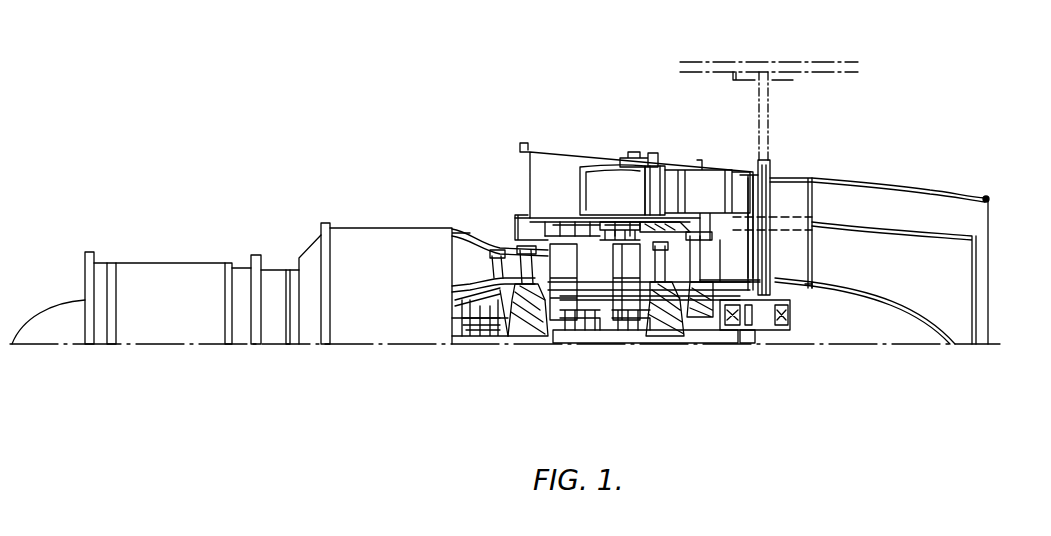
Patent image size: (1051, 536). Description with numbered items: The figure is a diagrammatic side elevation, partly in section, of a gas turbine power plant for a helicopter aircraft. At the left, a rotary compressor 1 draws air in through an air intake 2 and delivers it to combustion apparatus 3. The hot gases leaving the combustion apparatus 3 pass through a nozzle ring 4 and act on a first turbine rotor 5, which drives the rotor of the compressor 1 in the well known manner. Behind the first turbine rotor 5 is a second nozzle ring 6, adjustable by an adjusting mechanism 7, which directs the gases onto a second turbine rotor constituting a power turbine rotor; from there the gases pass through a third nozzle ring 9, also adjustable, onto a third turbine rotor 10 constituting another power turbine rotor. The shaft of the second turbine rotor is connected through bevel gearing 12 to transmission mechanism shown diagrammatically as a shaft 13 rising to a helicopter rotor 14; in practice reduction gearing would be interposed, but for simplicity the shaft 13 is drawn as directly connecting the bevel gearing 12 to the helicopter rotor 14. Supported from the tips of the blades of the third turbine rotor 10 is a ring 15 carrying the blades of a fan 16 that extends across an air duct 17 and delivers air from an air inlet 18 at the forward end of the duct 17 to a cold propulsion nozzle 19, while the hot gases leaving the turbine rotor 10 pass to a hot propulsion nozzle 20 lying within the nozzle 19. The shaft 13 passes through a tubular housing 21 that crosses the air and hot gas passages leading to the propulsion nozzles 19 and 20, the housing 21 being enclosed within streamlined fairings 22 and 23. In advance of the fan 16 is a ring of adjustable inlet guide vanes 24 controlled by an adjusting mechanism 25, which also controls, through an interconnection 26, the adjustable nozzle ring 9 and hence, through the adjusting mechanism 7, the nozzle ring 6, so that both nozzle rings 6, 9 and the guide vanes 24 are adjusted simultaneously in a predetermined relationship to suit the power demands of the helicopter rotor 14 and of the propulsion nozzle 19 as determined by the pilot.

The rotary compressor 1 is at (158, 273).
The air intake 2 is at (85, 288).
The combustion apparatus 3 is at (418, 236).
The nozzle ring 4 is at (496, 246).
The first turbine rotor 5 is at (524, 250).
The second nozzle ring 6 is at (572, 272).
The adjusting mechanism 7 is at (552, 228).
The third nozzle ring 9 is at (640, 270).
The third turbine rotor 10 is at (665, 255).
The bevel gearing 12 is at (747, 342).
The shaft 13 is at (768, 168).
The helicopter rotor 14 is at (823, 64).
The ring 15 is at (690, 232).
The fan 16 is at (690, 190).
The air duct 17 is at (610, 202).
The air inlet 18 is at (525, 165).
The cold propulsion nozzle 19 is at (990, 205).
The hot propulsion nozzle 20 is at (938, 283).
The tubular housing 21 is at (775, 180).
The streamlined fairing 22 is at (800, 184).
The streamlined fairing 23 is at (804, 258).
The adjustable inlet guide vanes 24 is at (662, 175).
The adjusting mechanism 25 is at (632, 152).
The interconnection 26 is at (627, 222).